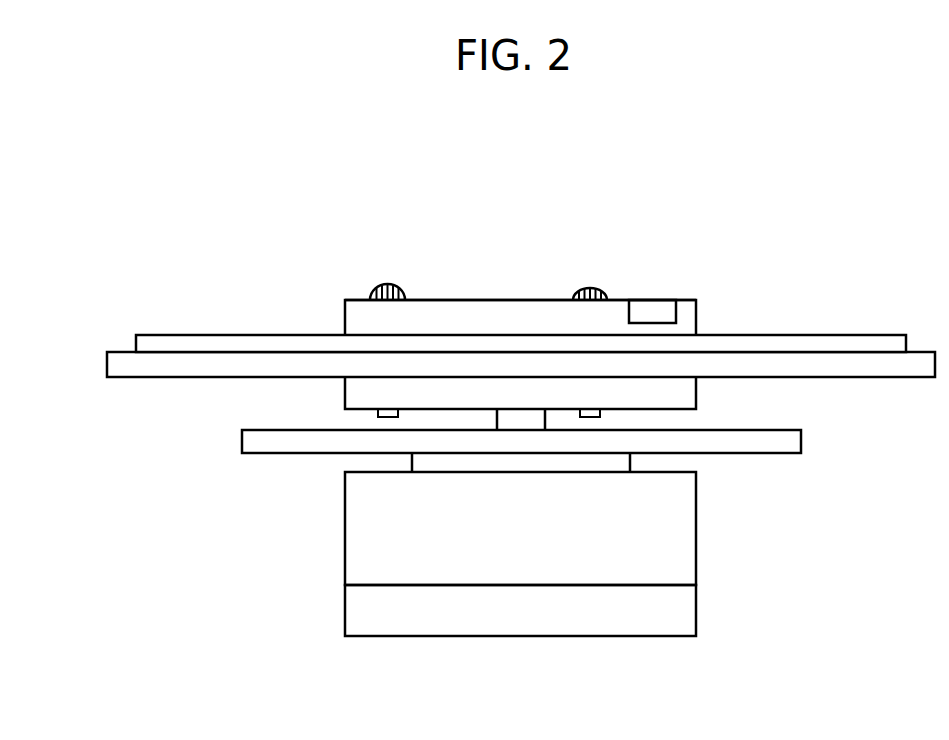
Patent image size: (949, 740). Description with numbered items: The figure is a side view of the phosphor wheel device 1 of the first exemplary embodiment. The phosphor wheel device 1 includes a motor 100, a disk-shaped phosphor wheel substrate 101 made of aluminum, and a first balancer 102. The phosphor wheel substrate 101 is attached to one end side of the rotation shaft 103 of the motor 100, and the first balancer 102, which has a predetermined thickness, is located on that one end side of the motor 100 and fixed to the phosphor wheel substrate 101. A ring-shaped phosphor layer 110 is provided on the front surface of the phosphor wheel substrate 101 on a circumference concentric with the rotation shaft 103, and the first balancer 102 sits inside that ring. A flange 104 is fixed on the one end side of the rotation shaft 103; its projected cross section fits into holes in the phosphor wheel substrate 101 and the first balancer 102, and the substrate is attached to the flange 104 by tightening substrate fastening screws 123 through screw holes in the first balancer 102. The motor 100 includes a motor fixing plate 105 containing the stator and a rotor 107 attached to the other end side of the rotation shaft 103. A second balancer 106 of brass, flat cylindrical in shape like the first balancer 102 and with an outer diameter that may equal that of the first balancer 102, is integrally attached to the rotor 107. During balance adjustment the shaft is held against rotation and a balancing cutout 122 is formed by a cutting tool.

The phosphor wheel device 1 is at (267, 232).
The motor 100 is at (335, 457).
The phosphor wheel substrate 101 is at (197, 367).
The first balancer 102 is at (477, 310).
The rotation shaft 103 is at (533, 421).
The flange 104 is at (697, 390).
The motor fixing plate 105 is at (257, 443).
The second balancer 106 is at (640, 604).
The rotor 107 is at (640, 507).
The phosphor layer 110 is at (162, 343).
The balancing cutout 122 is at (657, 308).
The substrate fastening screws 123 is at (390, 283).